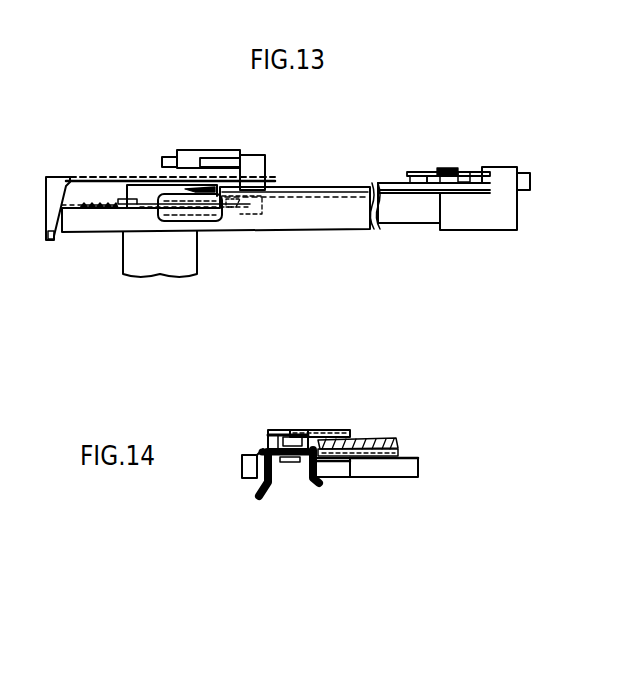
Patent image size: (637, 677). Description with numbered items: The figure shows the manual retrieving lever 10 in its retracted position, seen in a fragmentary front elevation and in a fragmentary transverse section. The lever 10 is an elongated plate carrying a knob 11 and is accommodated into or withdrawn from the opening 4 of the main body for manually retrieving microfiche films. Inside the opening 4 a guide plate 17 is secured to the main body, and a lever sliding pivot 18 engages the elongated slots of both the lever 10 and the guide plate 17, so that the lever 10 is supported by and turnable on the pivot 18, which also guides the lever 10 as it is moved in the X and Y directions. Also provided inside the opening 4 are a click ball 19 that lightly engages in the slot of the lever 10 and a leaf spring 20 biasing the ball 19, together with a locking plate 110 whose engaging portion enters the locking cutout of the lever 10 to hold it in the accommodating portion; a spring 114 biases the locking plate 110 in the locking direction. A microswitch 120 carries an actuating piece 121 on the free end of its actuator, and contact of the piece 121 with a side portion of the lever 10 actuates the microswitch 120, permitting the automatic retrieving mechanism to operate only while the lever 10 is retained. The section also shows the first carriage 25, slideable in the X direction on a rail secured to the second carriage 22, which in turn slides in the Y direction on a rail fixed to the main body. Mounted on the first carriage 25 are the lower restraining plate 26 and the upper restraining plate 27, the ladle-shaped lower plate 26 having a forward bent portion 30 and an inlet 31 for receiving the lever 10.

In FIG. 13, the manual retrieving lever 10 is at (337, 190).
In FIG. 14, the manual retrieving lever 10 is at (275, 435).
In FIG. 13, the knob 11 is at (173, 221).
In FIG. 14, the knob 11 is at (248, 470).
In FIG. 13, the guide plate 17 is at (335, 218).
In FIG. 14, the guide plate 17 is at (278, 458).
In FIG. 13, the click ball 19 is at (232, 202).
In FIG. 13, the leaf spring 20 is at (237, 205).
In FIG. 13, the locking plate 110 is at (125, 209).
In FIG. 13, the spring 114 is at (97, 203).
In FIG. 13, the microswitch 120 is at (187, 150).
In FIG. 13, the actuating piece 121 is at (249, 158).
In FIG. 14, the opening 4 is at (257, 445).
In FIG. 14, the lever sliding pivot 18 is at (292, 440).
In FIG. 14, the second carriage 22 is at (320, 484).
In FIG. 14, the first carriage 25 is at (360, 478).
In FIG. 14, the lower restraining plate 26 is at (393, 479).
In FIG. 14, the upper restraining plate 27 is at (375, 440).
In FIG. 14, the forward bent portion 30 is at (397, 441).
In FIG. 14, the inlet 31 is at (320, 438).